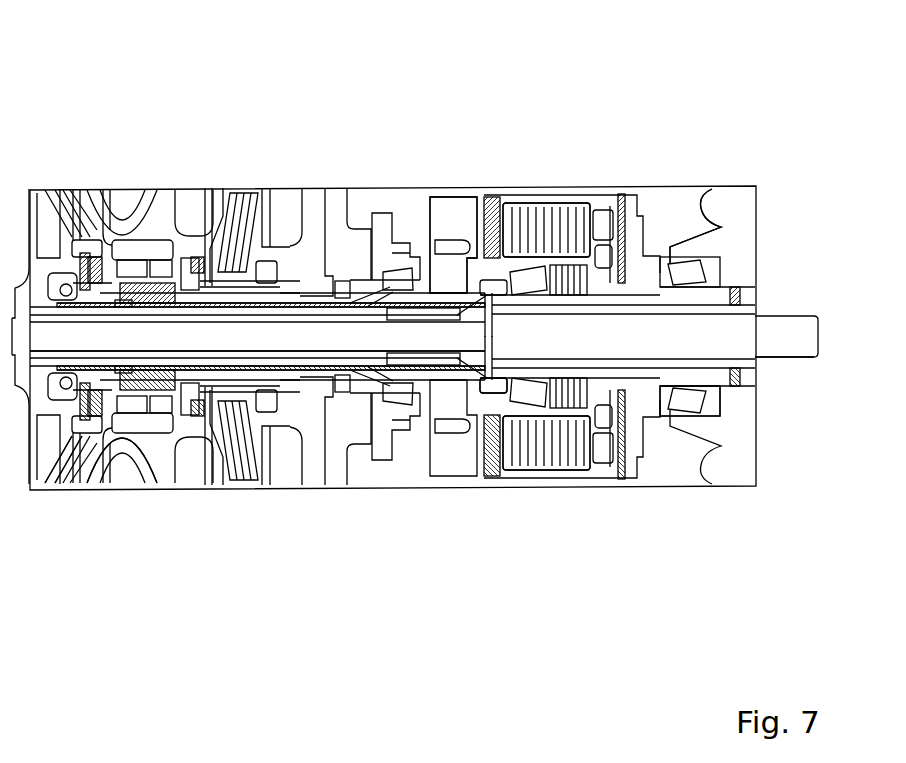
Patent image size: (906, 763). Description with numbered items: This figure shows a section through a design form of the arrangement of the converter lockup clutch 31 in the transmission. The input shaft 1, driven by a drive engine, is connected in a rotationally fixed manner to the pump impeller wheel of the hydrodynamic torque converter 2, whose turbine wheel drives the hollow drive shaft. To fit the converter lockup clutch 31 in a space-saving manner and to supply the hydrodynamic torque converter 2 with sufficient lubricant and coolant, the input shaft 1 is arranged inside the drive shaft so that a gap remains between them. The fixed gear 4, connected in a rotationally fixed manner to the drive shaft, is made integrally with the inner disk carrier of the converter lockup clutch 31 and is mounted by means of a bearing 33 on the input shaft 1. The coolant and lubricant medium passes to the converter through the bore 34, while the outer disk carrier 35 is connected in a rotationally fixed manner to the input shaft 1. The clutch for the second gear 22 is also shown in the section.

The input shaft 1 is at (229, 338).
The hydrodynamic torque converter 2 is at (145, 466).
The fixed gear 4 is at (452, 224).
The clutch for the second gear 22 is at (337, 360).
The converter lockup clutch 31 is at (553, 482).
The bearing 33 is at (505, 205).
The bore 34 is at (637, 360).
The outer disk carrier 35 is at (622, 210).